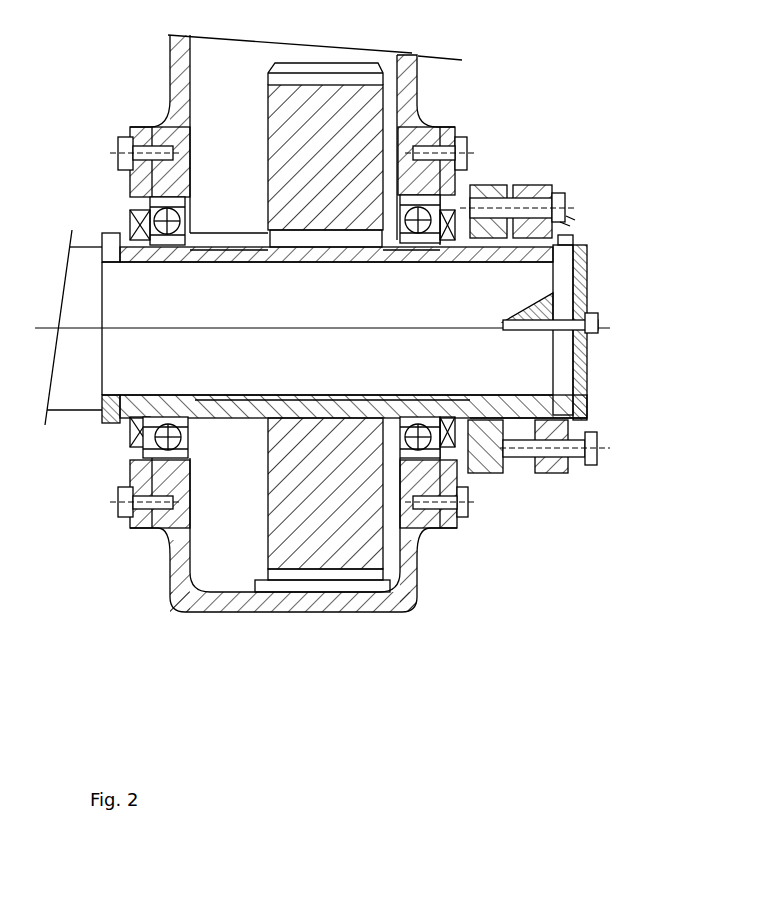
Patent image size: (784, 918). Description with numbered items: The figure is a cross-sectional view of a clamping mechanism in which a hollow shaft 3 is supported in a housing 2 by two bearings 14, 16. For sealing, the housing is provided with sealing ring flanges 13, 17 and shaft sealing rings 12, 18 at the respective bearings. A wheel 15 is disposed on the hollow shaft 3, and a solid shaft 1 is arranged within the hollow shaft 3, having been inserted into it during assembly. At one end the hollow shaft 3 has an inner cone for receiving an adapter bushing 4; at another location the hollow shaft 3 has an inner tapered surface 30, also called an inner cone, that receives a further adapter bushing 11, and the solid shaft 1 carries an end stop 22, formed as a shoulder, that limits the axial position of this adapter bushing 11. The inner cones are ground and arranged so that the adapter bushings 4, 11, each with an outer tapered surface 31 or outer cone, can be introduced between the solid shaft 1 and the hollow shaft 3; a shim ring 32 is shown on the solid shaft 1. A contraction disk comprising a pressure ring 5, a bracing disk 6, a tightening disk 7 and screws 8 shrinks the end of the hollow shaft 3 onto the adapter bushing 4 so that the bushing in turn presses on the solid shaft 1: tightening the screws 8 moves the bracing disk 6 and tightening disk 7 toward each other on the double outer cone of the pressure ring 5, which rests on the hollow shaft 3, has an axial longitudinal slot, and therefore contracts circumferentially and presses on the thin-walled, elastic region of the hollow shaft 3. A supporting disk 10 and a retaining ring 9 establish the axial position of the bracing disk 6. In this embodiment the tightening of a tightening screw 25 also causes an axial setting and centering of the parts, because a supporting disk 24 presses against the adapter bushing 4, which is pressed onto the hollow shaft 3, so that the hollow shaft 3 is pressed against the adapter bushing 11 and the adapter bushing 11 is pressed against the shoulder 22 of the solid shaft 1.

The solid shaft 1 is at (463, 530).
The housing 2 is at (430, 527).
The hollow shaft 3 is at (463, 397).
The adapter bushing 4 is at (583, 248).
The pressure ring 5 is at (568, 233).
The bracing disk 6 is at (517, 180).
The tightening disk 7 is at (556, 188).
The screws 8 is at (540, 200).
The retaining ring 9 is at (445, 416).
The supporting disk 10 is at (555, 395).
The adapter bushing 11 is at (100, 420).
The shaft sealing ring 12 is at (132, 433).
The sealing ring flange 13 is at (132, 466).
The bearing 14 is at (137, 512).
The wheel 15 is at (344, 347).
The bearing 16 is at (477, 473).
The sealing ring flange 17 is at (497, 473).
The shaft sealing ring 18 is at (513, 473).
The end stop 22 is at (100, 256).
The supporting disk 24 is at (578, 268).
The tightening screw 25 is at (548, 298).
The inner tapered surface 30 is at (578, 149).
The outer tapered surface 31 is at (578, 210).
The shim ring 32 is at (672, 157).